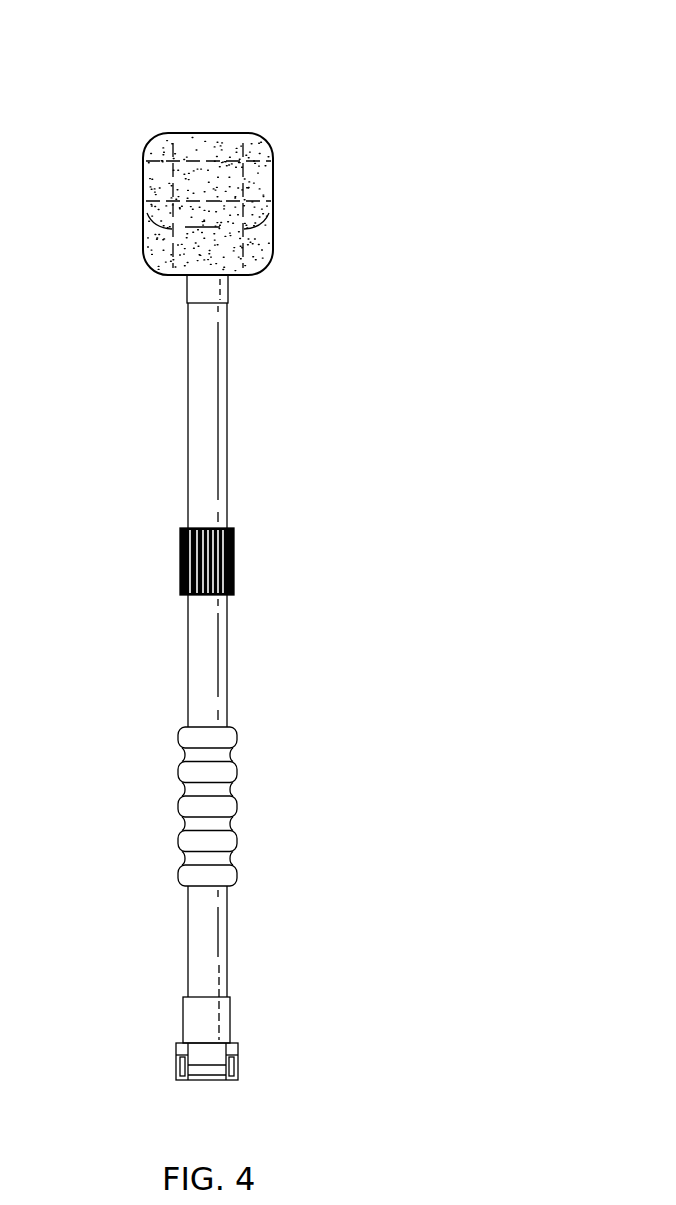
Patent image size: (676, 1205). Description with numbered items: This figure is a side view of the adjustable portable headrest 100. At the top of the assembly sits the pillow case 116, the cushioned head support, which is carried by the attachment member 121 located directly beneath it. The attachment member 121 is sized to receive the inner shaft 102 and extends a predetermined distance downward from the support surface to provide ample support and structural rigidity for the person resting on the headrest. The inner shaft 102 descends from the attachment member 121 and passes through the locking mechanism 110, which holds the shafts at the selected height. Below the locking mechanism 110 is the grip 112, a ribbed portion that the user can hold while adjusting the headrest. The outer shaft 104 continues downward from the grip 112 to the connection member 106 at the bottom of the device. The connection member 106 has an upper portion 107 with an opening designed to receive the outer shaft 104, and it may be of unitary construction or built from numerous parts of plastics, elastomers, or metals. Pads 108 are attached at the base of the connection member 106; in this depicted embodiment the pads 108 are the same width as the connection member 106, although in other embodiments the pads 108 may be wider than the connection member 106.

The adjustable portable headrest 100 is at (415, 110).
The pillow case 116 is at (143, 181).
The attachment member 121 is at (228, 287).
The inner shaft 102 is at (227, 400).
The locking mechanism 110 is at (180, 548).
The grip 112 is at (178, 803).
The outer shaft 104 is at (227, 927).
The connection member 106 is at (252, 1030).
The upper portion 107 is at (183, 1020).
The pads 108 is at (208, 1080).